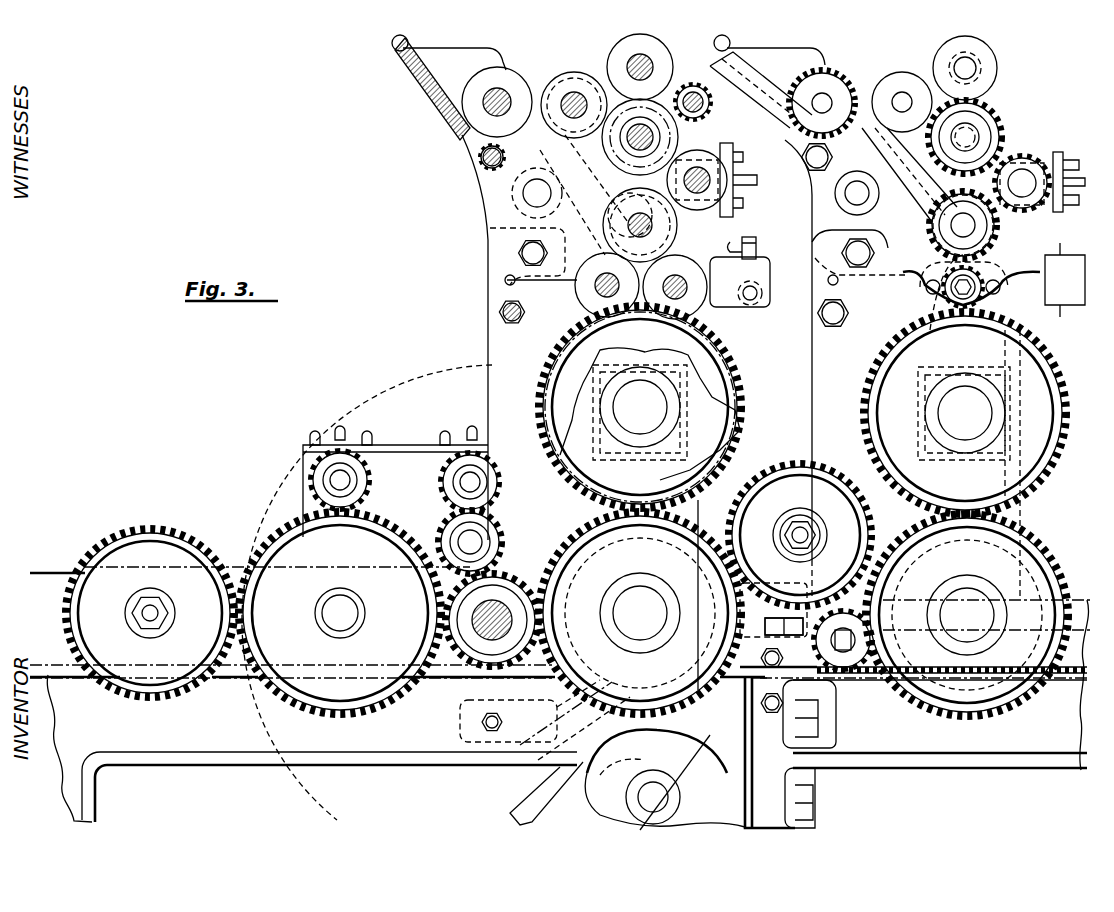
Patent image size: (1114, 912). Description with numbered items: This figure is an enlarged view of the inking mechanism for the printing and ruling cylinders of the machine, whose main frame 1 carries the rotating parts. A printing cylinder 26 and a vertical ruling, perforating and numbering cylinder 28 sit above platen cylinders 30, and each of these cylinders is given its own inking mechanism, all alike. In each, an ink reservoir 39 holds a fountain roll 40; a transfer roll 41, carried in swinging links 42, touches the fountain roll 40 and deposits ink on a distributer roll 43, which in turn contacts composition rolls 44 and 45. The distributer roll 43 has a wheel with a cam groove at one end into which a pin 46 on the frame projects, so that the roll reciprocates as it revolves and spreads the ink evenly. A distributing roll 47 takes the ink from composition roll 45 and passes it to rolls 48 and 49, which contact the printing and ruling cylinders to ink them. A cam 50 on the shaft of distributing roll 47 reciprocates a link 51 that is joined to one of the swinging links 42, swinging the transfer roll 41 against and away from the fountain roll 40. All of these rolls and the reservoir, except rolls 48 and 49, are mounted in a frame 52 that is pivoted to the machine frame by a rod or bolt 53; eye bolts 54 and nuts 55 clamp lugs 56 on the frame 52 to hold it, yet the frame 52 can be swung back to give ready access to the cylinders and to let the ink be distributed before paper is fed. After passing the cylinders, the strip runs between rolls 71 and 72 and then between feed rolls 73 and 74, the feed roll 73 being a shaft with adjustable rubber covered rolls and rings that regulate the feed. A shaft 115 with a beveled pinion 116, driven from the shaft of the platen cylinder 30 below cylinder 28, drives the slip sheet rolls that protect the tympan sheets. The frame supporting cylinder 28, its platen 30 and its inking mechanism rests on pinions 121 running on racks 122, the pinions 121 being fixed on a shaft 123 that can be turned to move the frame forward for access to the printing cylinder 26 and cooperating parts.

The main frame 1 is at (226, 743).
The printing cylinder 26 is at (775, 398).
The vertical ruling, perforating and numbering cylinder 28 is at (965, 413).
The platen cylinder 30 is at (645, 590).
The ink reservoir 39 is at (410, 92).
The fountain roll 40 is at (507, 80).
The transfer roll 41 is at (574, 80).
The swinging links 42 is at (540, 150).
The distributer roll 43 is at (693, 85).
The composition roll 44 is at (628, 45).
The composition roll 45 is at (710, 160).
The pin 46 is at (640, 125).
The distributing roll 47 is at (603, 232).
The roll 48 is at (578, 300).
The roll 49 is at (690, 305).
The cam 50 is at (677, 235).
The link 51 is at (590, 195).
The frame 52 is at (487, 215).
The rod or bolt 53 is at (520, 260).
The eye bolts 54 is at (765, 266).
The nuts 55 is at (752, 242).
The lugs 56 is at (764, 295).
The roll 71 is at (460, 484).
The roll 72 is at (492, 542).
The feed roll 73 is at (330, 478).
The feed roll 74 is at (358, 608).
The shaft 115 is at (529, 793).
The beveled pinion 116 is at (560, 690).
The pinions 121 is at (850, 660).
The racks 122 is at (1010, 670).
The shaft 123 is at (860, 620).